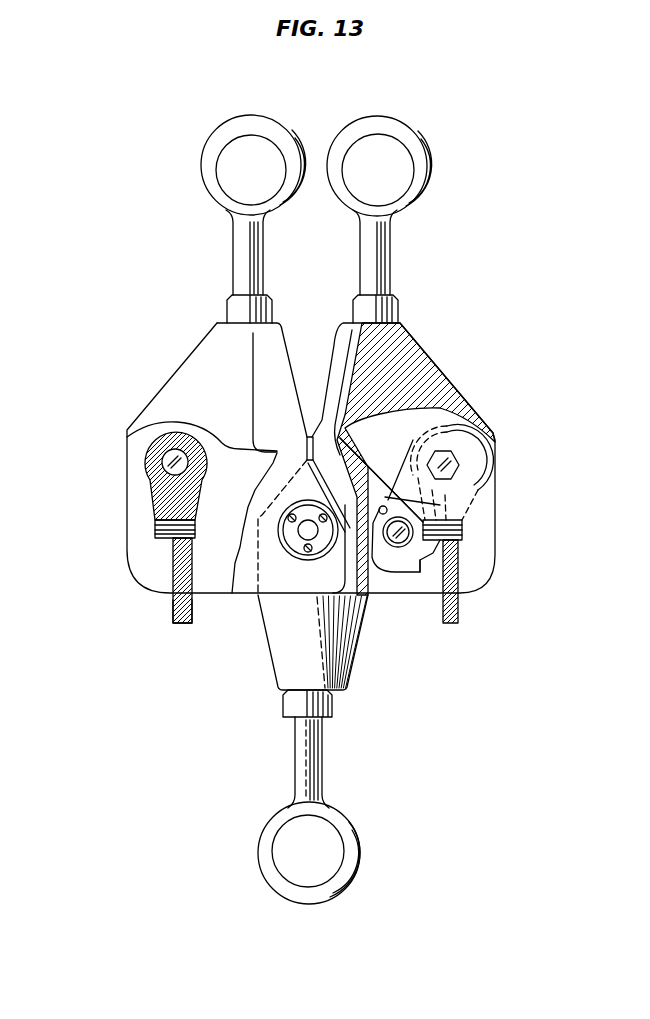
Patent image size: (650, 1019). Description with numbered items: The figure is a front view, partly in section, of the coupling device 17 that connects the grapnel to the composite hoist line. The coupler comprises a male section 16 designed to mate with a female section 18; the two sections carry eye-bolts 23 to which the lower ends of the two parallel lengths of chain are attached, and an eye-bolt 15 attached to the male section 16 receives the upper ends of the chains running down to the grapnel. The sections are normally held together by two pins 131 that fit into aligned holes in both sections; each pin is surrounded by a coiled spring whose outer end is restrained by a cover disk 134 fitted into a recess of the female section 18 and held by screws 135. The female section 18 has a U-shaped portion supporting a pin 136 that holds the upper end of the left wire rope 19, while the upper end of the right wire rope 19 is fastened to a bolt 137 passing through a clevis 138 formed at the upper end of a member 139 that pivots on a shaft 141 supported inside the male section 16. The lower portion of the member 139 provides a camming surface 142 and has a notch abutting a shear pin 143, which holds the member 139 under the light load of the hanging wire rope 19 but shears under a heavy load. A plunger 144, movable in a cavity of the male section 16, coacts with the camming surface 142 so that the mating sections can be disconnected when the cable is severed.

The eye-bolt 15 is at (262, 857).
The male section 16 is at (438, 372).
The coupling device 17 is at (304, 255).
The female section 18 is at (195, 372).
The wire rope 19 is at (172, 614).
The eye-bolt 23 is at (205, 174).
The pin 131 is at (313, 539).
The cover disk 134 is at (287, 551).
The screw 135 is at (295, 545).
The pin 136 is at (147, 465).
The bolt 137 is at (455, 465).
The clevis 138 is at (462, 480).
The member 139 is at (420, 568).
The shaft 141 is at (412, 562).
The camming surface 142 is at (408, 577).
The shear pin 143 is at (392, 501).
The plunger 144 is at (360, 583).